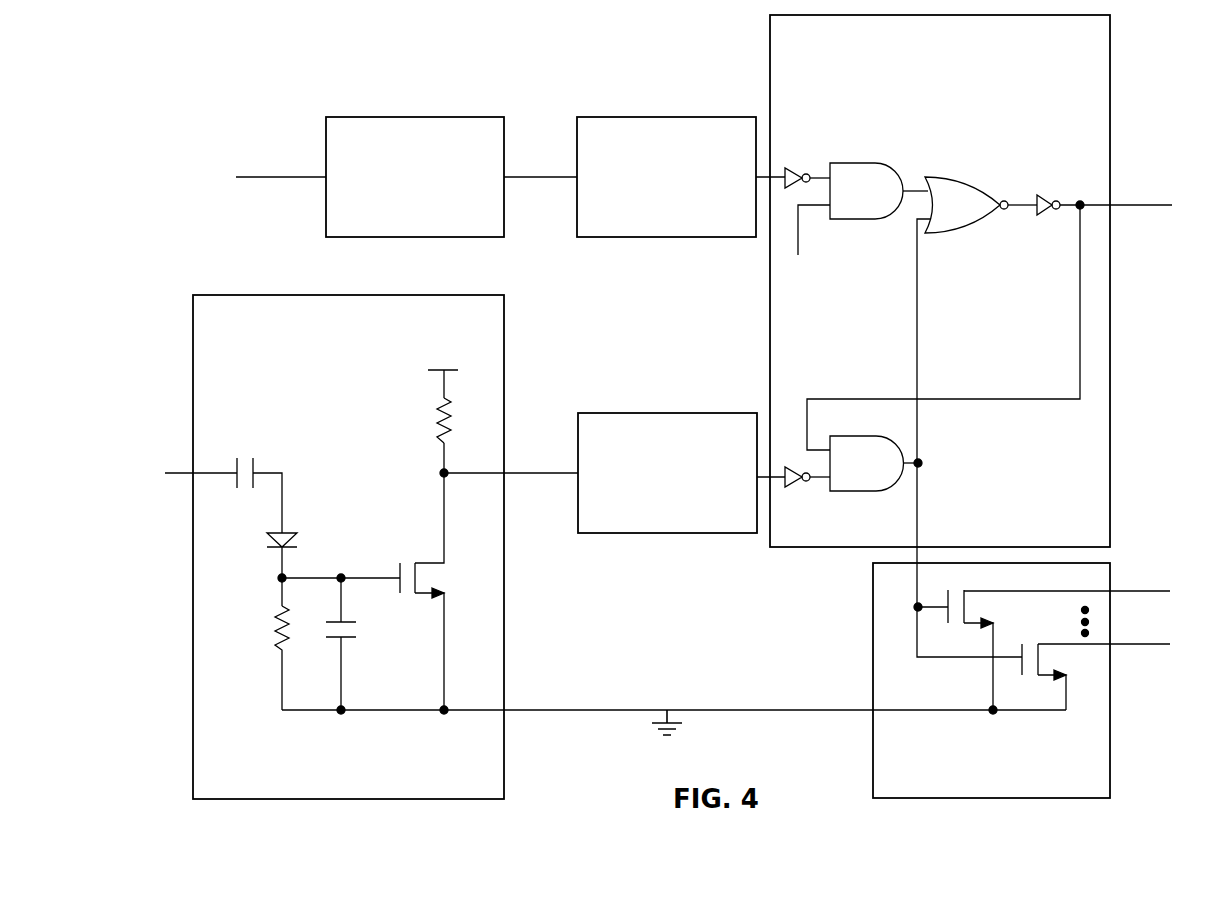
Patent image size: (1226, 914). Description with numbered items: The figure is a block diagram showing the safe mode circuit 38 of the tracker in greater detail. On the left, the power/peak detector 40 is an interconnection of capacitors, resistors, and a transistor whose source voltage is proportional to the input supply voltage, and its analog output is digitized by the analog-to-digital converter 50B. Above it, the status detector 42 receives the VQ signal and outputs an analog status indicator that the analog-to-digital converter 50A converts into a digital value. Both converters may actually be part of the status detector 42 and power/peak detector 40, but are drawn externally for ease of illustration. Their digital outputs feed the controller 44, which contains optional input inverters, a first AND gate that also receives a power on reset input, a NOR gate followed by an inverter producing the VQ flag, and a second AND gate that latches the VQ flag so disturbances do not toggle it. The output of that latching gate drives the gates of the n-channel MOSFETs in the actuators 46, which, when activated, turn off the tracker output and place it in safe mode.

The safe mode circuit 38 is at (232, 60).
The power/peak detector 40 is at (336, 780).
The status detector 42 is at (403, 210).
The controller 44 is at (928, 77).
The actuators 46 is at (980, 792).
The analog-to-digital converter 50A is at (648, 201).
The analog-to-digital converter 50B is at (649, 496).